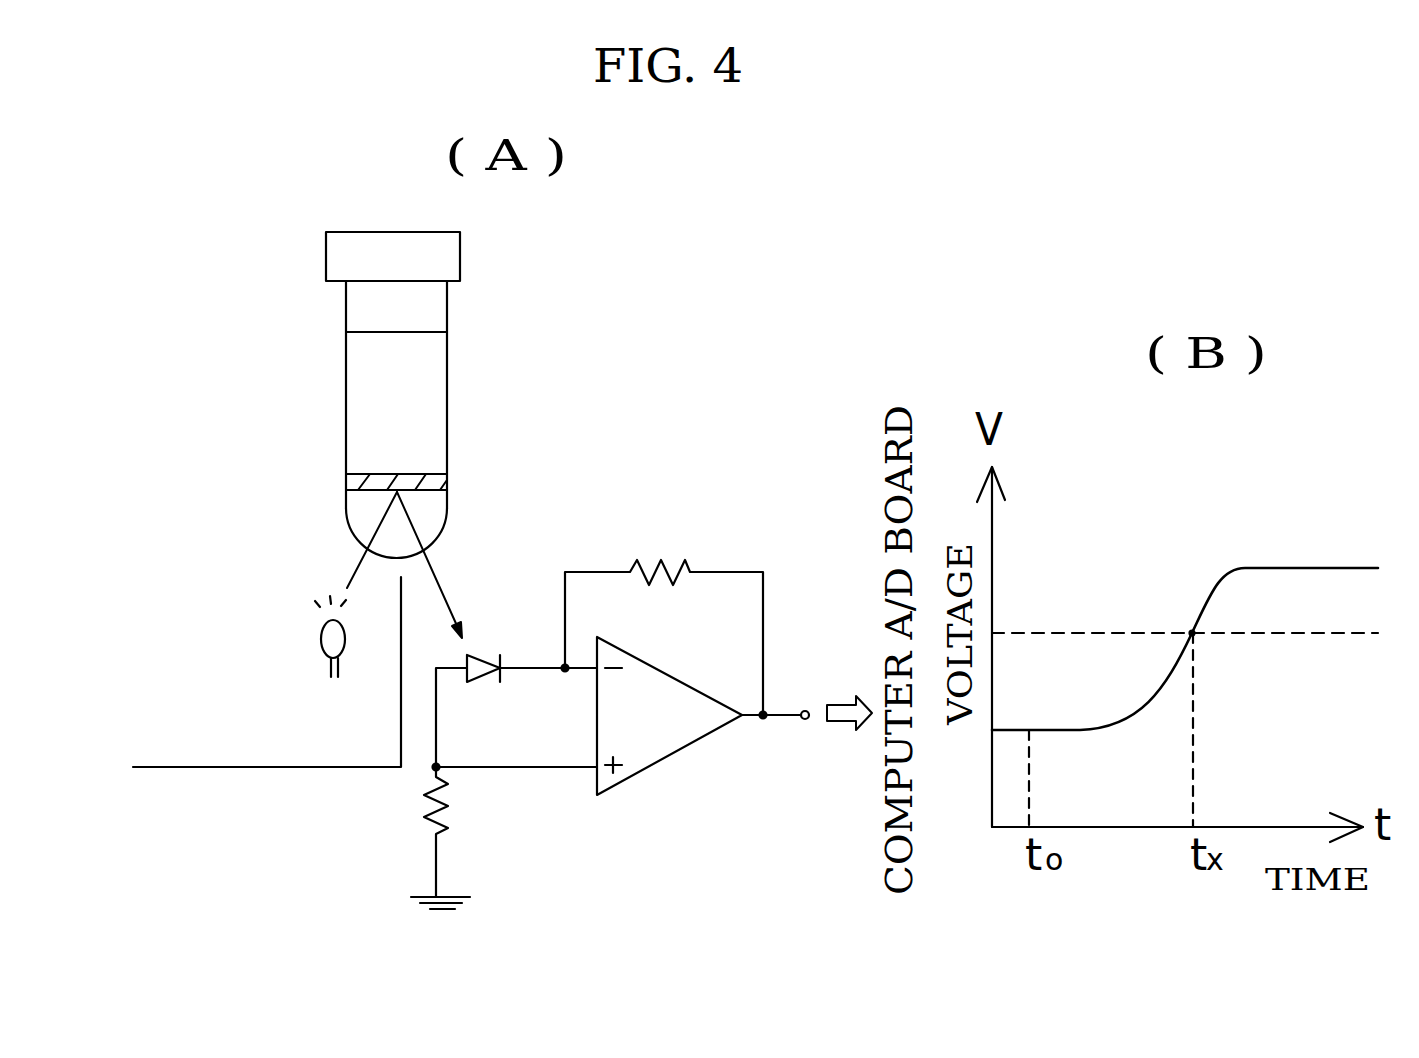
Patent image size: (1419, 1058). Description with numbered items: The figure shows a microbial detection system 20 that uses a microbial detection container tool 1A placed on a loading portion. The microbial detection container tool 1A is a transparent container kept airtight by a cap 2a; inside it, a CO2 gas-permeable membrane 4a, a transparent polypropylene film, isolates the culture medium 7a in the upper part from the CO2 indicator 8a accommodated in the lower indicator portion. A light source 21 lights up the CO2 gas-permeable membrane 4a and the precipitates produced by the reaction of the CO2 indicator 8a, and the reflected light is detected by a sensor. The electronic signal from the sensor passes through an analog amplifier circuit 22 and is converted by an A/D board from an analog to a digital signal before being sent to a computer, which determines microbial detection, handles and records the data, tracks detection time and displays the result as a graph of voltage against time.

The microbial detection container tool 1A is at (455, 321).
The cap 2a is at (333, 258).
The culture medium 7a is at (435, 364).
The CO2 gas-permeable membrane 4a is at (447, 484).
The CO2 indicator 8a is at (438, 516).
The light source 21 is at (320, 642).
The microbial detection system 20 is at (672, 536).
The analog amplifier circuit 22 is at (697, 742).